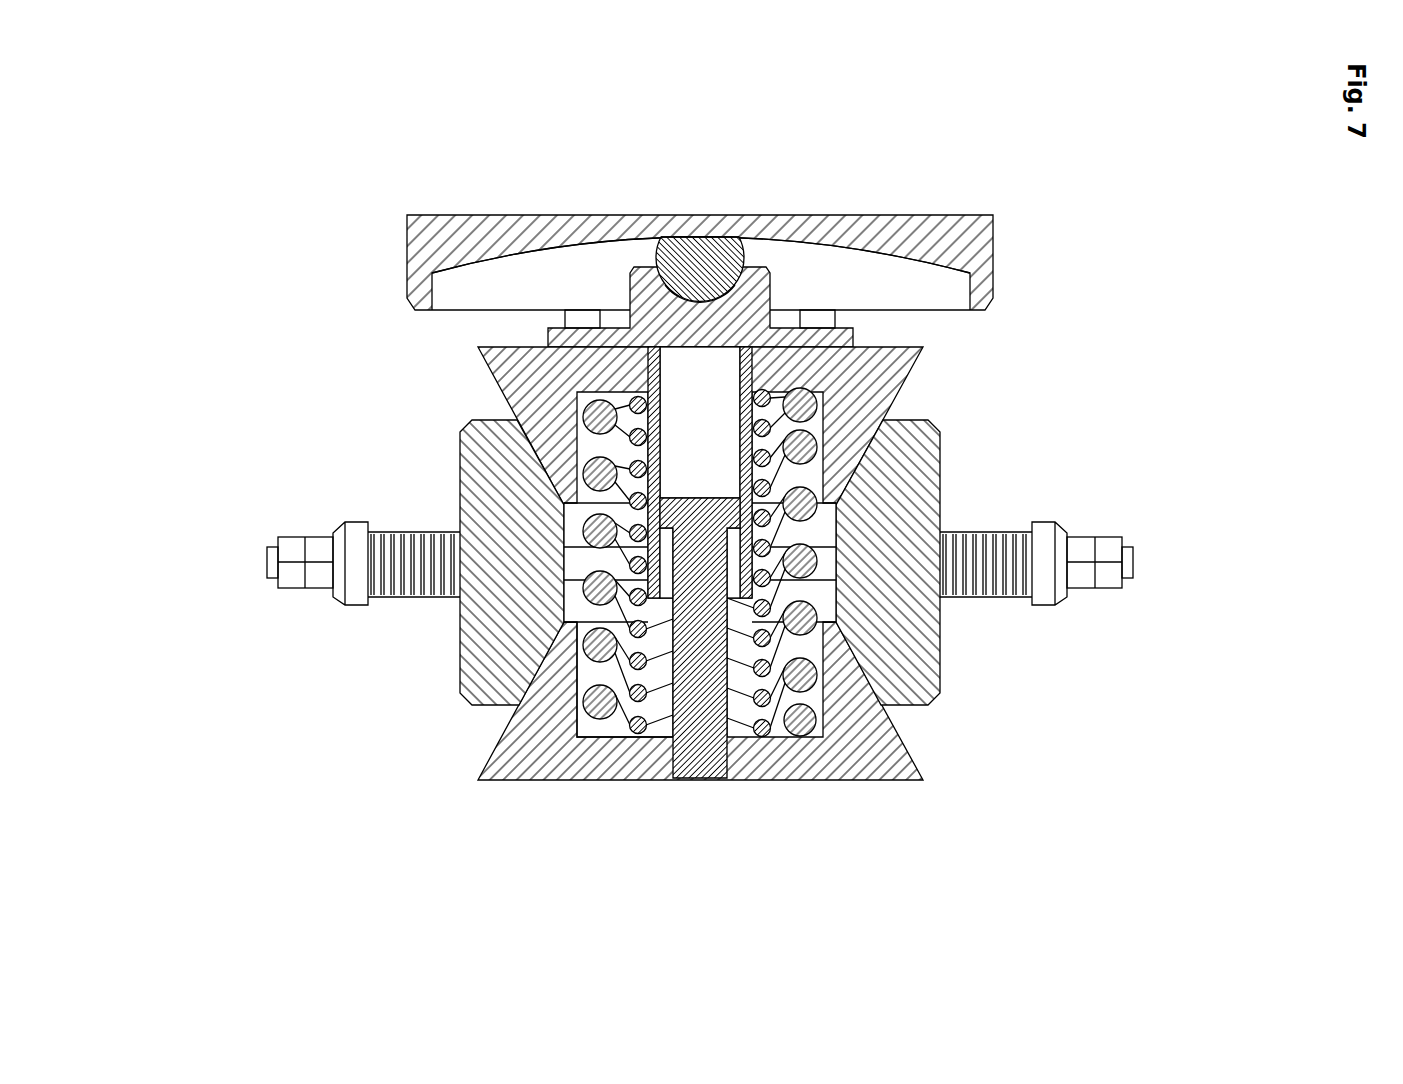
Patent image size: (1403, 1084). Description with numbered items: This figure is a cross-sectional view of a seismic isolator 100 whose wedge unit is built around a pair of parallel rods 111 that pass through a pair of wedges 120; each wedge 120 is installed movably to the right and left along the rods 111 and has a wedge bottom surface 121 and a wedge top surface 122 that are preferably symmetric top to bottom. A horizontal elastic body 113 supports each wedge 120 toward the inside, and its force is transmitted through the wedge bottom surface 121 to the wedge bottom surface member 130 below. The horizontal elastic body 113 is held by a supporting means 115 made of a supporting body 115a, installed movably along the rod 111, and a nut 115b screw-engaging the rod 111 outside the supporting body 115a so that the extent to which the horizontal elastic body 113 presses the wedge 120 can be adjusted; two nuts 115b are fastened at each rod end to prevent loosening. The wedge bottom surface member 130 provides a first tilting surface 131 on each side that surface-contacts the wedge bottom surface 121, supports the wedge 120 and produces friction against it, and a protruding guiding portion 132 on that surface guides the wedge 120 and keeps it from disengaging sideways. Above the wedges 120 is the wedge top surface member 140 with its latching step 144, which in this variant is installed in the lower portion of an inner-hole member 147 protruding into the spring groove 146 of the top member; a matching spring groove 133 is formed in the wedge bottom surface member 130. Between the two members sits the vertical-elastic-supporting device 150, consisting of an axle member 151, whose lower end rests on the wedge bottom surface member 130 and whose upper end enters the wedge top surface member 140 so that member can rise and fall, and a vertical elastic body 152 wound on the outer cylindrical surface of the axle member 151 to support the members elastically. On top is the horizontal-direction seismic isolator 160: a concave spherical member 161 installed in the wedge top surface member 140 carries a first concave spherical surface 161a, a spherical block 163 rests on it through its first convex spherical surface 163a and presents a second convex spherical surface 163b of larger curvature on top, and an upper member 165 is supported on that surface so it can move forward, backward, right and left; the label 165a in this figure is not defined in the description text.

The seismic isolator 100 is at (316, 210).
The rod 111 is at (1134, 570).
The horizontal elastic body 113 is at (995, 530).
The supporting means 115 is at (1072, 518).
The supporting body 115a is at (1063, 605).
The nut 115b is at (1108, 586).
The wedge 120 is at (458, 627).
The wedge bottom surface 121 is at (855, 683).
The wedge top surface 122 is at (853, 450).
The wedge bottom surface member 130 is at (871, 762).
The first tilting surface 131 is at (905, 738).
The guiding portion 132 is at (890, 403).
The spring groove 133 is at (572, 695).
The wedge top surface member 140 is at (918, 370).
The latching step 144 is at (730, 598).
The spring groove 146 is at (598, 440).
The inner-hole member 147 is at (648, 365).
The vertical-elastic-supporting device 150 is at (620, 676).
The axle member 151 is at (683, 781).
The vertical elastic body 152 is at (590, 642).
The horizontal-direction seismic isolator 160 is at (443, 210).
The concave spherical member 161 is at (847, 252).
The first concave spherical surface 161a is at (732, 236).
The spherical block 163 is at (678, 250).
The first convex spherical surface 163a is at (656, 298).
The second convex spherical surface 163b is at (720, 268).
The upper member 165 is at (965, 232).
The cover cavity surface 165a is at (512, 265).